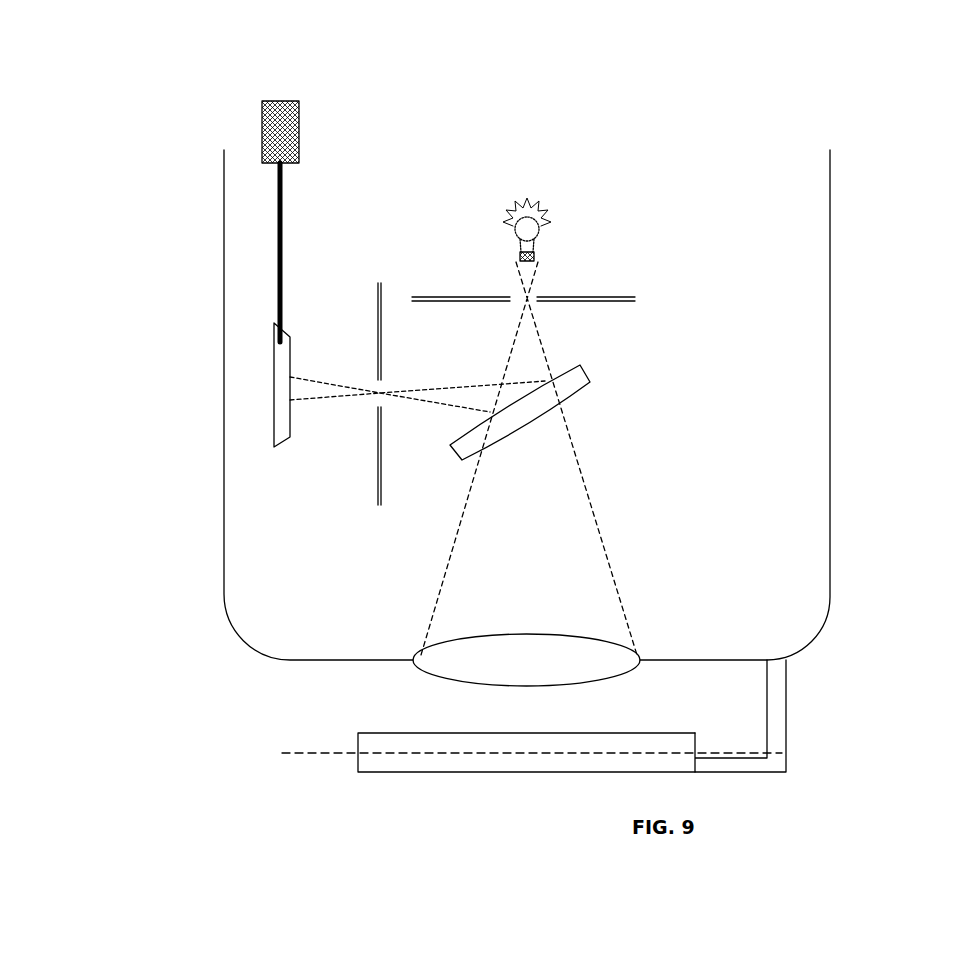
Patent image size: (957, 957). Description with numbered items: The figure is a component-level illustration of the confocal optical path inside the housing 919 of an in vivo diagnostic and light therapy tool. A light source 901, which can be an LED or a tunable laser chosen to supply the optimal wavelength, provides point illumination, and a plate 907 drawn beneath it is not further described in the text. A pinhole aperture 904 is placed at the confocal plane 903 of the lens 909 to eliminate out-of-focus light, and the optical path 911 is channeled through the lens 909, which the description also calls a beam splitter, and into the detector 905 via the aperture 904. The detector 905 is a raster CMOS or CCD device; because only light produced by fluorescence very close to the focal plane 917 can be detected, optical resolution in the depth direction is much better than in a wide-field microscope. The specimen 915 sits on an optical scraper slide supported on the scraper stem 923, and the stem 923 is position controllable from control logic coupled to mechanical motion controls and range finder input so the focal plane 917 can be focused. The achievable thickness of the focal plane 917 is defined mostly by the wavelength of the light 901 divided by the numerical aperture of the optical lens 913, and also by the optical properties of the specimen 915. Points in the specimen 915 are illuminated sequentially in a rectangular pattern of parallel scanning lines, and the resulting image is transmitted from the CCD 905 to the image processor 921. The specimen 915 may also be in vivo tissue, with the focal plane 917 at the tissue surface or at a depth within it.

The light source 901 is at (512, 233).
The confocal plane 903 is at (375, 322).
The pinhole aperture 904 is at (375, 402).
The detector 905 is at (282, 393).
The aperture plate 907 is at (563, 297).
The lens 909 is at (580, 393).
The optical path 911 is at (448, 585).
The optical lens 913 is at (577, 662).
The specimen 915 is at (670, 747).
The focal plane 917 is at (450, 753).
The housing 919 is at (831, 407).
The image processor 921 is at (262, 130).
The scraper stem 923 is at (786, 775).